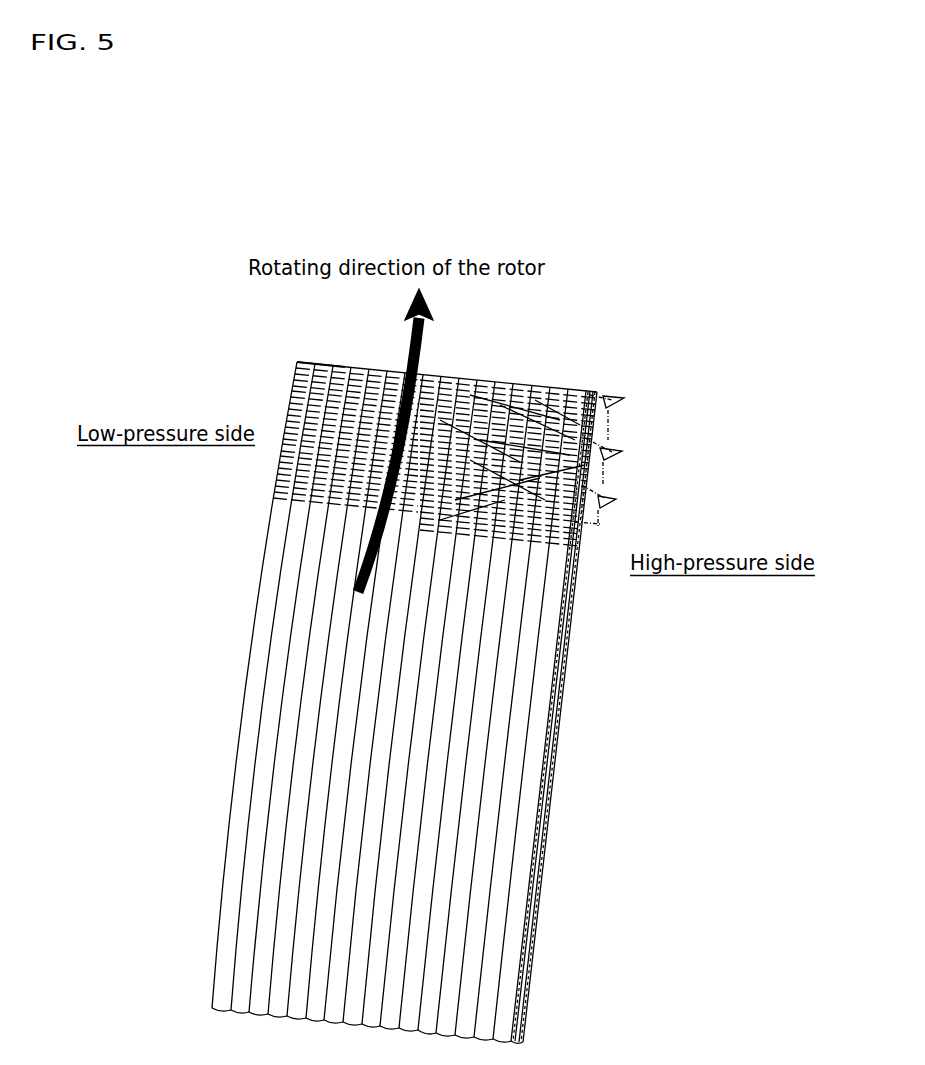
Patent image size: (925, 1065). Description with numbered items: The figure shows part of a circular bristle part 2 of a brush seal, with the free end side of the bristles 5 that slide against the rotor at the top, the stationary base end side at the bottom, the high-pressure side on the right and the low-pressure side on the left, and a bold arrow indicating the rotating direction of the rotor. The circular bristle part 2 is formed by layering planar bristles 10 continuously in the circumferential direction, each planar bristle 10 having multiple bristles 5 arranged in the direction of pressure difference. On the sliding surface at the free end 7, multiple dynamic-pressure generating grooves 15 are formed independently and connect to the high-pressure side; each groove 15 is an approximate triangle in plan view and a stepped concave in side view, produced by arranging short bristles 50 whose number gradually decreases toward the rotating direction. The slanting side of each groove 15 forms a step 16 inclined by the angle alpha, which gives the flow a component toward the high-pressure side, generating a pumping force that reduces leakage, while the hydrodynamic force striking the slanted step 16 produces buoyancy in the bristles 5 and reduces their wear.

The circular bristle part 2 is at (262, 520).
The bristles 5 is at (262, 582).
The free end 7 is at (320, 362).
The planar bristle 10 is at (298, 370).
The dynamic-pressure generating groove 15 is at (597, 398).
The step 16 is at (541, 370).
The short bristles 50 is at (537, 376).